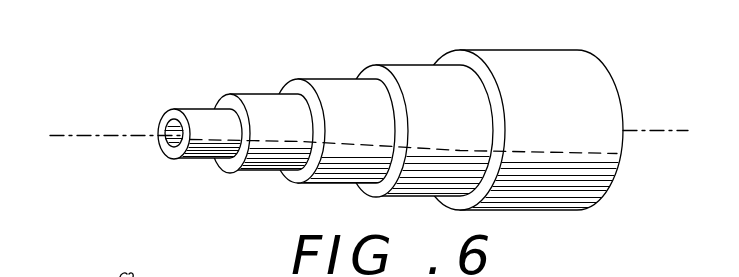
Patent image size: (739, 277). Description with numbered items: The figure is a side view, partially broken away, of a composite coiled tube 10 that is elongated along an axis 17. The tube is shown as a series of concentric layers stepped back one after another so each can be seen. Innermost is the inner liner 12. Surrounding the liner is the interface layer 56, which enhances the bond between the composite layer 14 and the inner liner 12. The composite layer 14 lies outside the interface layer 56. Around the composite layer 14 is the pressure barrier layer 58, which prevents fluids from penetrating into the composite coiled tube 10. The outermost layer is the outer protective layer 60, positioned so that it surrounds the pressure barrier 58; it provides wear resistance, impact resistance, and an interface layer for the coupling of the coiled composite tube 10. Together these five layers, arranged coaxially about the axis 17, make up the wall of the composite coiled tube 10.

The composite coiled tube 10 is at (390, 112).
The inner liner 12 is at (224, 136).
The composite layer 14 is at (364, 136).
The interface layer 56 is at (293, 135).
The pressure barrier layer 58 is at (461, 134).
The outer protective layer 60 is at (571, 134).
The axis 17 is at (100, 134).